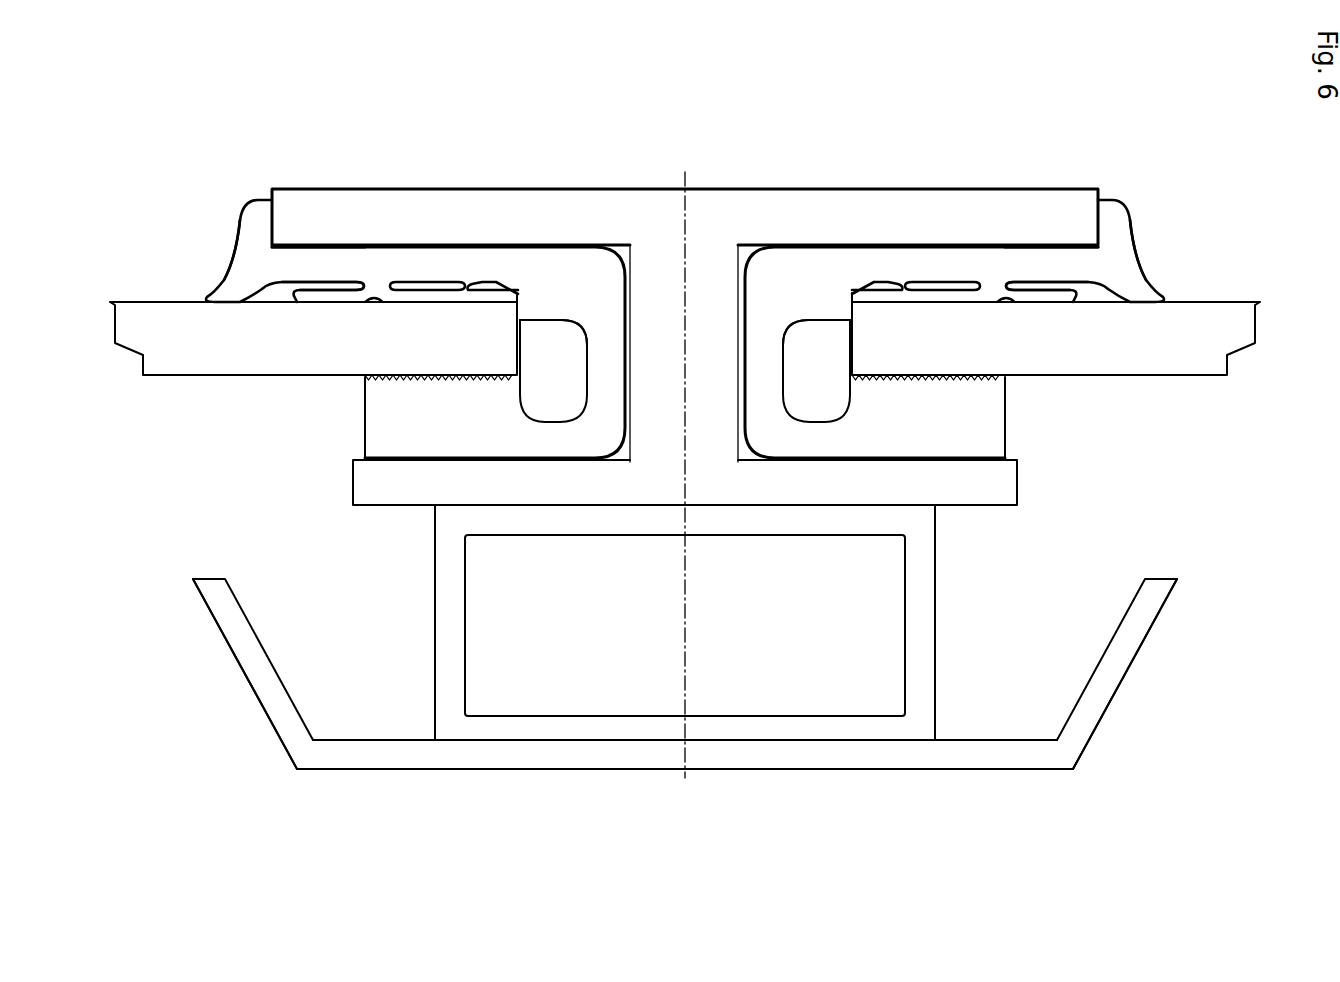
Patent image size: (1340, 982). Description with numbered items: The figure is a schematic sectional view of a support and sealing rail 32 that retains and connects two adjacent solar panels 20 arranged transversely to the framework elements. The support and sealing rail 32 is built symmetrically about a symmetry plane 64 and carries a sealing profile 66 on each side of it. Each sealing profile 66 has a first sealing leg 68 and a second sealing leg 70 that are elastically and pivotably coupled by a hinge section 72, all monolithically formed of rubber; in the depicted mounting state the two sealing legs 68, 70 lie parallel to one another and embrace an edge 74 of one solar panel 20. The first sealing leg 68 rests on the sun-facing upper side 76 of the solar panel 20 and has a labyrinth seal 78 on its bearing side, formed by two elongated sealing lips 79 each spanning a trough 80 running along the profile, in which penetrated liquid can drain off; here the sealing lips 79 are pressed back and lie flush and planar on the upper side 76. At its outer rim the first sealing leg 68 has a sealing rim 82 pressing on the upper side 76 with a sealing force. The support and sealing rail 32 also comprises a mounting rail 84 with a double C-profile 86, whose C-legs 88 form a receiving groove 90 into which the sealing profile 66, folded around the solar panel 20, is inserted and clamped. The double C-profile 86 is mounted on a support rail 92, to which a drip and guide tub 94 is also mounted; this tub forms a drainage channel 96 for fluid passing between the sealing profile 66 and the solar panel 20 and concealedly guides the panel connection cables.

The solar panel 20 is at (136, 313).
The support and sealing rail 32 is at (1040, 110).
The symmetry plane 64 is at (685, 188).
The sealing profile 66 is at (552, 265).
The first sealing leg 68 is at (348, 260).
The second sealing leg 70 is at (693, 448).
The hinge section 72 is at (600, 357).
The edge 74 is at (519, 341).
The upper side 76 is at (178, 270).
The labyrinth seal 78 is at (386, 282).
The sealing lip 79 is at (432, 294).
The trough 80 is at (272, 296).
The sealing rim 82 is at (230, 210).
The mounting rail 84 is at (643, 120).
The double C-profile 86 is at (716, 202).
The C-leg 88 is at (300, 198).
The receiving groove 90 is at (320, 412).
The support rail 92 is at (653, 628).
The drip and guide tub 94 is at (225, 644).
The drainage channel 96 is at (265, 598).